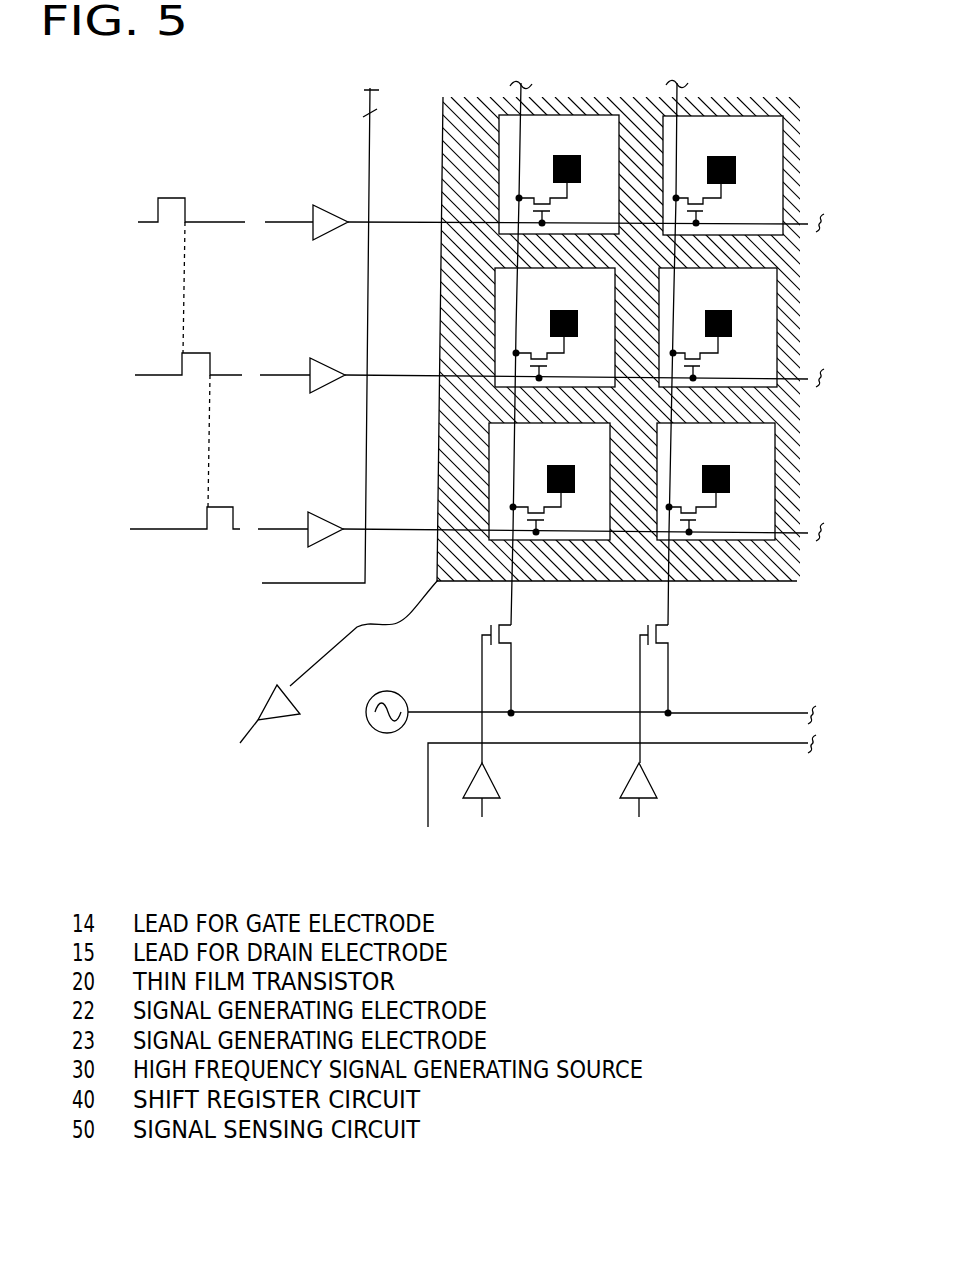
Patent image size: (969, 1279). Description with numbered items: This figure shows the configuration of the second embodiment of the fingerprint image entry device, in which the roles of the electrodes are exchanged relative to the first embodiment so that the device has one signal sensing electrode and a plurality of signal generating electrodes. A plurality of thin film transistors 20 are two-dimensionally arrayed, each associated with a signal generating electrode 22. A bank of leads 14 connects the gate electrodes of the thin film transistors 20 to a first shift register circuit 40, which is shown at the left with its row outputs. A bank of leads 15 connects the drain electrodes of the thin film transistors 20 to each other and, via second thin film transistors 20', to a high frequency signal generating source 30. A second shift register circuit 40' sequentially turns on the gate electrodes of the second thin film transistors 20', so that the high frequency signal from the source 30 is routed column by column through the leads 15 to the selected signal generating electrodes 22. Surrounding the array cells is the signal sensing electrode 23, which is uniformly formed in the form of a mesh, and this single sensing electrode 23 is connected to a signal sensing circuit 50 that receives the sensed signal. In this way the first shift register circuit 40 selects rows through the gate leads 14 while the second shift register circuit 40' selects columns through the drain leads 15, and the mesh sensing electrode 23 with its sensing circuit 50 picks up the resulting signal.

The leads for gate electrodes 14 is at (417, 220).
The leads for drain electrodes 15 is at (673, 596).
The thin film transistor 20 is at (644, 359).
The second thin film transistor 20' is at (607, 694).
The signal generating electrode 22 is at (736, 158).
The signal sensing electrode 23 is at (636, 103).
The high frequency signal generating source 30 is at (370, 730).
The first shift register circuit 40 is at (278, 330).
The second shift register circuit 40' is at (643, 759).
The signal sensing circuit 50 is at (262, 698).